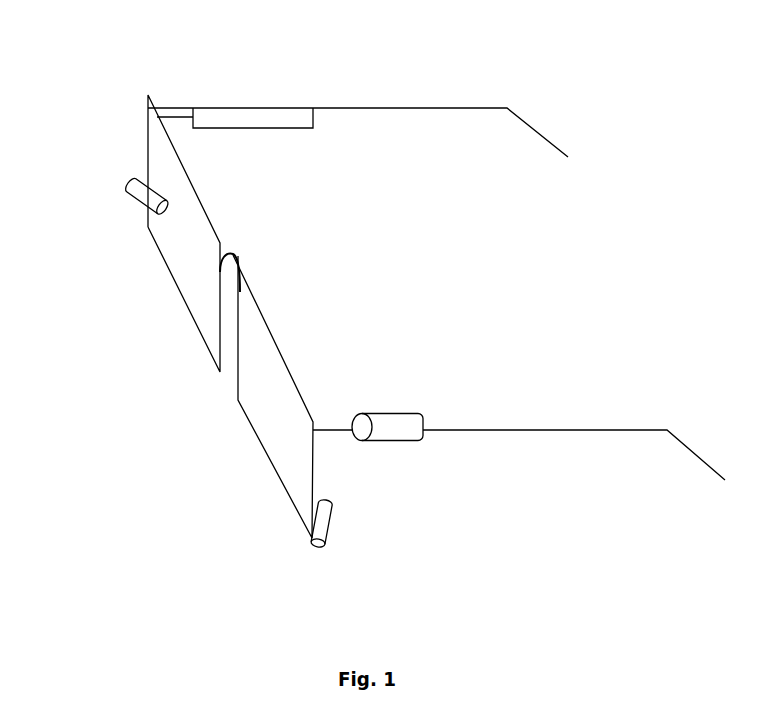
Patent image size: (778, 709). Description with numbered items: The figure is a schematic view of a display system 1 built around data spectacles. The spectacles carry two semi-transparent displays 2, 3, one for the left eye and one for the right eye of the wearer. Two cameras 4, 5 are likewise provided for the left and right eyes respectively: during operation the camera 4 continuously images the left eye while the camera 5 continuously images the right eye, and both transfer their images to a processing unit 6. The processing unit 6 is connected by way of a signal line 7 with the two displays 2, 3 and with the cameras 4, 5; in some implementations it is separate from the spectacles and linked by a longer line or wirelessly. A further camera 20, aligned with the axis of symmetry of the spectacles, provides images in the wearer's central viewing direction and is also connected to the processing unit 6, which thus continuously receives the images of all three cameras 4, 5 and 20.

The display system 1 is at (545, 461).
The display 2 is at (317, 452).
The display 3 is at (145, 157).
The camera 4 is at (332, 528).
The camera 5 is at (123, 175).
The processing unit 6 is at (290, 113).
The signal line 7 is at (170, 112).
The camera 20 is at (397, 445).